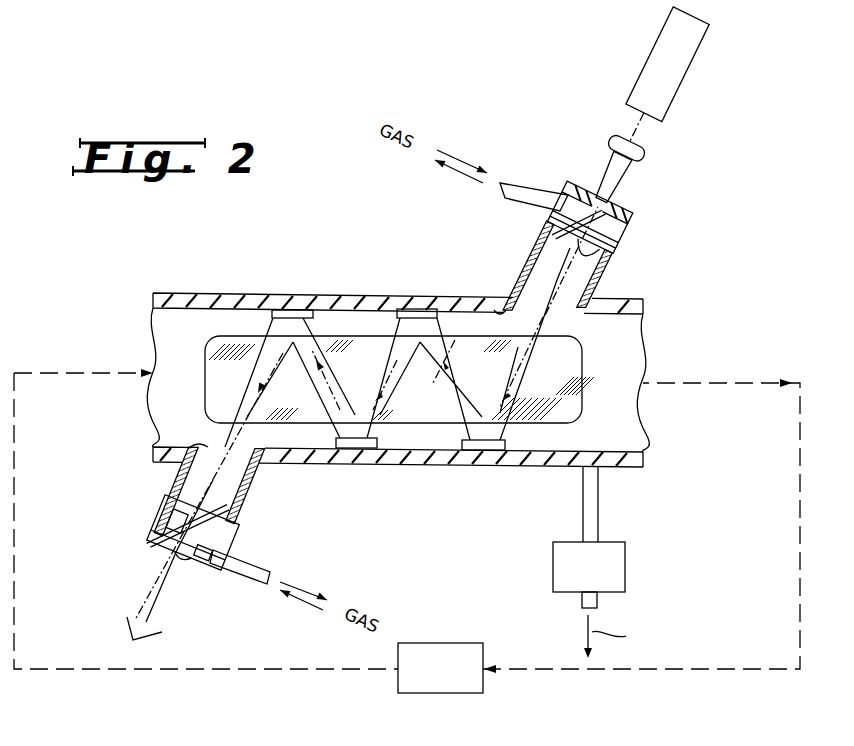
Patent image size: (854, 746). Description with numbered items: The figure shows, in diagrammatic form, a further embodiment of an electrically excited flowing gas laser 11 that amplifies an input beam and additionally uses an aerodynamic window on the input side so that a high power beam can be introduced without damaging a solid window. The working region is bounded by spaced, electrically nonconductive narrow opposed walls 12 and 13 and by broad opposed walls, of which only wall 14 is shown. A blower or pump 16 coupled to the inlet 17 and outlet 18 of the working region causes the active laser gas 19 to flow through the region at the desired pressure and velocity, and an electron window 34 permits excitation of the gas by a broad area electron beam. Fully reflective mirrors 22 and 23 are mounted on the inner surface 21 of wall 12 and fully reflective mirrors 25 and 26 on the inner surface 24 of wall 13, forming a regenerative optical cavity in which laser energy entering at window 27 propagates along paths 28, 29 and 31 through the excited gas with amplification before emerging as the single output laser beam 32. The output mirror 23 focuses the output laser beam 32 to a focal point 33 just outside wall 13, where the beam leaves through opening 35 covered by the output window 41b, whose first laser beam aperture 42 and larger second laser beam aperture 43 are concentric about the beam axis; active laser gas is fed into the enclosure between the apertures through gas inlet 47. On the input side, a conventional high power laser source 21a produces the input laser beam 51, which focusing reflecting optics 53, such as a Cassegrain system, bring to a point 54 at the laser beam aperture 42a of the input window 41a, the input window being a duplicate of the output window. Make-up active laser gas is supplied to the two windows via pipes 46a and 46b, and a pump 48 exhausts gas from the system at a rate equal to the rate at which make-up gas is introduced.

The laser 11 is at (56, 613).
The narrow opposed wall 12 is at (620, 297).
The narrow opposed wall 13 is at (642, 466).
The broad opposed wall 14 is at (623, 408).
The blower or pump 16 is at (444, 643).
The inlet 17 is at (160, 305).
The outlet 18 is at (640, 432).
The active laser gas 19 is at (70, 371).
The inner surface 21 is at (612, 318).
The high power laser source 21a is at (688, 72).
The fully reflective mirror 22 is at (420, 307).
The output mirror 23 is at (293, 308).
The inner surface 24 is at (575, 450).
The fully reflective mirror 25 is at (490, 453).
The fully reflective mirror 26 is at (366, 453).
The window 27 is at (508, 304).
The beam path 28 is at (540, 330).
The beam path 29 is at (400, 385).
The beam path 31 is at (340, 357).
The output laser beam 32 is at (282, 385).
The focal point 33 is at (178, 523).
The electron window 34 is at (583, 360).
The opening 35 is at (205, 440).
The input window 41a is at (637, 218).
The output window 41b is at (213, 575).
The first laser beam aperture 42 is at (232, 515).
The laser beam aperture 42a is at (605, 257).
The second laser beam aperture 43 is at (183, 565).
The pipe 46a is at (275, 572).
The pipe 46b is at (520, 208).
The gas inlet 47 is at (232, 553).
The pump 48 is at (627, 562).
The input laser beam 51 is at (622, 182).
The focusing reflecting optics 53 is at (648, 148).
The point 54 is at (540, 253).